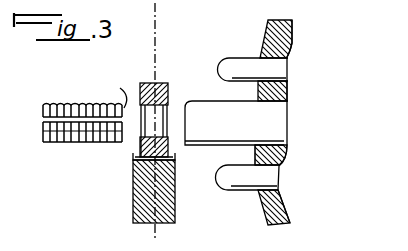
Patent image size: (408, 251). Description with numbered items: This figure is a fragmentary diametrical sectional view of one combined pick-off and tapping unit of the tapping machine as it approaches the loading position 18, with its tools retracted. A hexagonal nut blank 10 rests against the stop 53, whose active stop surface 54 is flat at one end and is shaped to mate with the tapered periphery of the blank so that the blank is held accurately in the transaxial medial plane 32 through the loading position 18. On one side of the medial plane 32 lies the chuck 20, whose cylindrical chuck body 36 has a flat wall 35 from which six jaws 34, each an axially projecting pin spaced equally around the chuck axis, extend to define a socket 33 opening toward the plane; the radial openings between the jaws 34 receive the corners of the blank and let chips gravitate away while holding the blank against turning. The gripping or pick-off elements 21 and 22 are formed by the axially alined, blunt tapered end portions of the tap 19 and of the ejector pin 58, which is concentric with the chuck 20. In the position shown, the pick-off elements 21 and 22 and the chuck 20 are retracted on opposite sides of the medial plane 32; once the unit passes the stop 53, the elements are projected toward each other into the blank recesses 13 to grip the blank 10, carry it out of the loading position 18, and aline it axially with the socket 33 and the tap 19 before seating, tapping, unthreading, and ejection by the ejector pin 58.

The nut blank 10 is at (142, 82).
The blank recesses 13 is at (141, 139).
The loading position 18 is at (193, 63).
The tap 19 is at (69, 105).
The chuck 20 is at (265, 27).
The pick-off element 21 is at (118, 91).
The pick-off element 22 is at (183, 106).
The medial plane 32 is at (157, 72).
The socket 33 is at (224, 151).
The jaws 34 is at (238, 58).
The flat wall 35 is at (258, 92).
The chuck body 36 is at (271, 206).
The stop 53 is at (145, 212).
The stop surface 54 is at (137, 158).
The ejector pin 58 is at (281, 118).